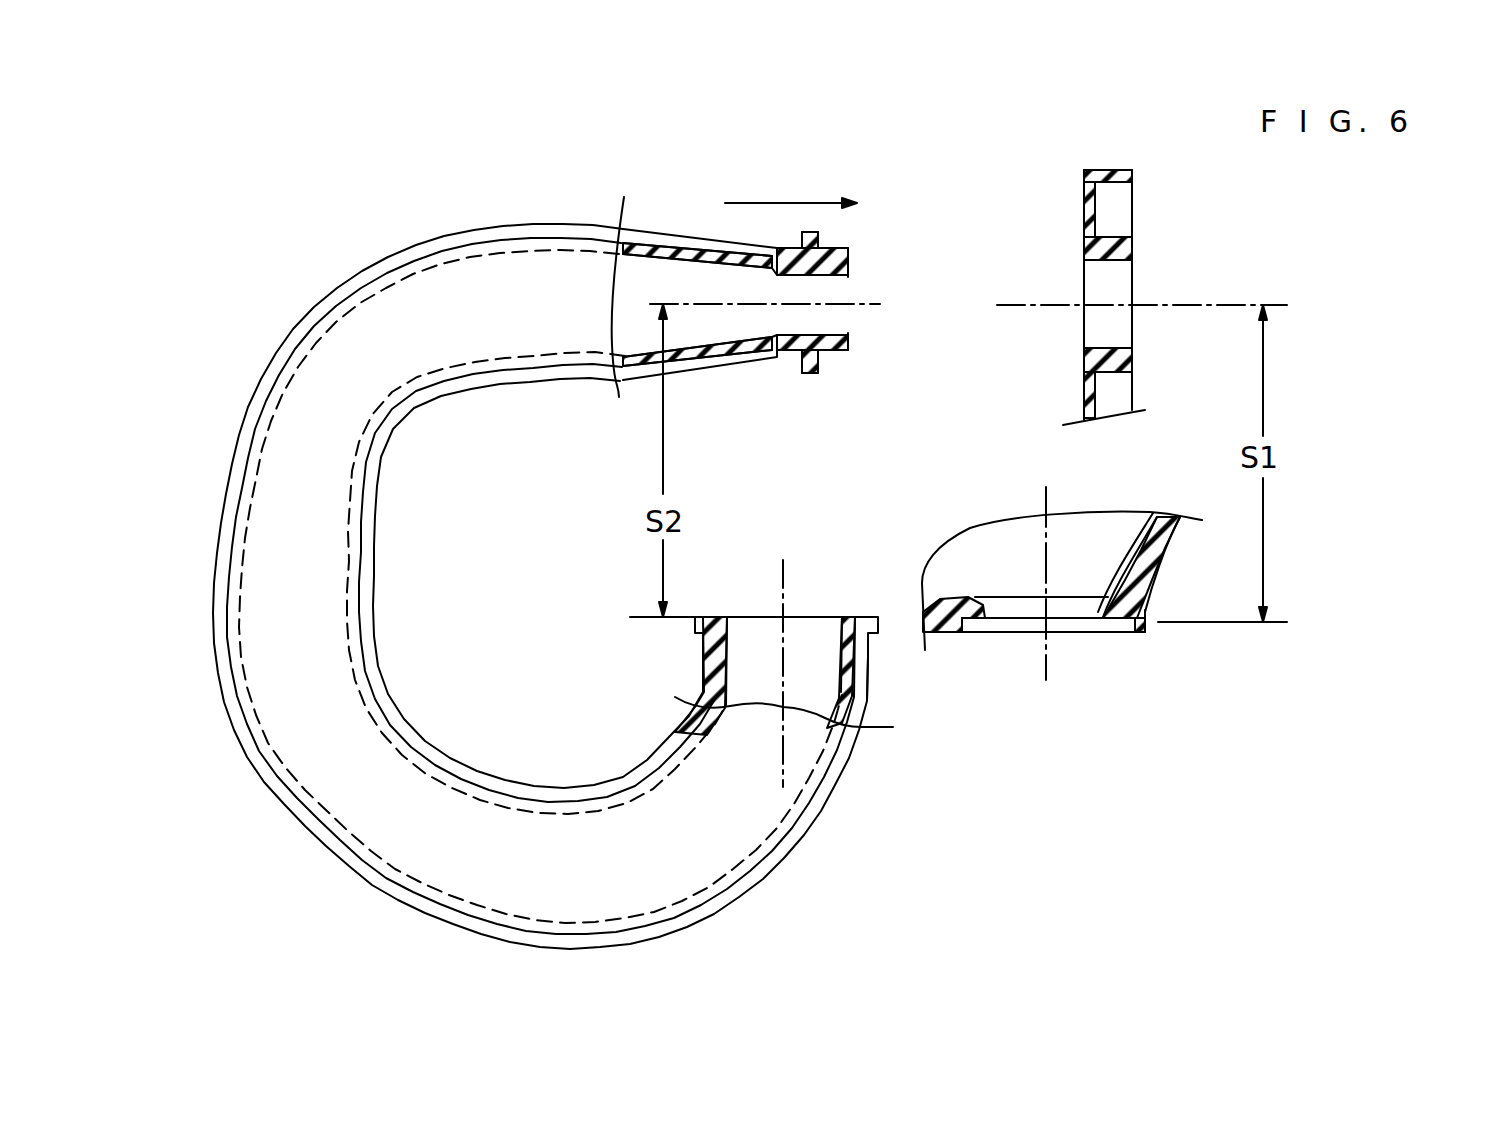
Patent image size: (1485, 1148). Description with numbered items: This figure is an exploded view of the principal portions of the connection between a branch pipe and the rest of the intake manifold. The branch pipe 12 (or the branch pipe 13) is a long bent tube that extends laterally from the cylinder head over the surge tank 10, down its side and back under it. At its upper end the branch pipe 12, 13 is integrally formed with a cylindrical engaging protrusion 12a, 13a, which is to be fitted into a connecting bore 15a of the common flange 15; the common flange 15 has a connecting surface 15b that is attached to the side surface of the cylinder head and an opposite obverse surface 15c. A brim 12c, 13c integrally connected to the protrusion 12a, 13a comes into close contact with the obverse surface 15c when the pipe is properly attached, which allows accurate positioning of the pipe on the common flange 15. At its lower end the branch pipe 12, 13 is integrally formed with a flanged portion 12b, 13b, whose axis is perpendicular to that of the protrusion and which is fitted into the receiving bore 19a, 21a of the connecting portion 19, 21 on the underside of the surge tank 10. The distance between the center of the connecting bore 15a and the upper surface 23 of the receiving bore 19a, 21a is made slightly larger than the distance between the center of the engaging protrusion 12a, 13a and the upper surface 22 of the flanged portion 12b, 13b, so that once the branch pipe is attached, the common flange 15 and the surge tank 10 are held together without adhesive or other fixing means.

The surge tank 10 is at (1097, 656).
The branch pipe 12 is at (338, 360).
The cylindrical engaging protrusion 12a is at (766, 333).
The flanged portion 12b is at (784, 657).
The brim 12c is at (810, 377).
The branch pipe 13 is at (540, 570).
The cylindrical engaging protrusion 13a is at (819, 312).
The flanged portion 13b is at (861, 660).
The brim 13c is at (842, 393).
The common flange 15 is at (1121, 267).
The connecting bore 15a is at (1120, 280).
The connecting surface 15b is at (1133, 215).
The obverse surface 15c is at (1083, 198).
The connecting portion 19 is at (1102, 674).
The receiving bore 19a is at (1103, 628).
The connecting portion 21 is at (1128, 674).
The receiving bore 21a is at (1102, 721).
The upper surface of flanged portion 22 is at (824, 617).
The upper surface of receiving bore 23 is at (980, 617).